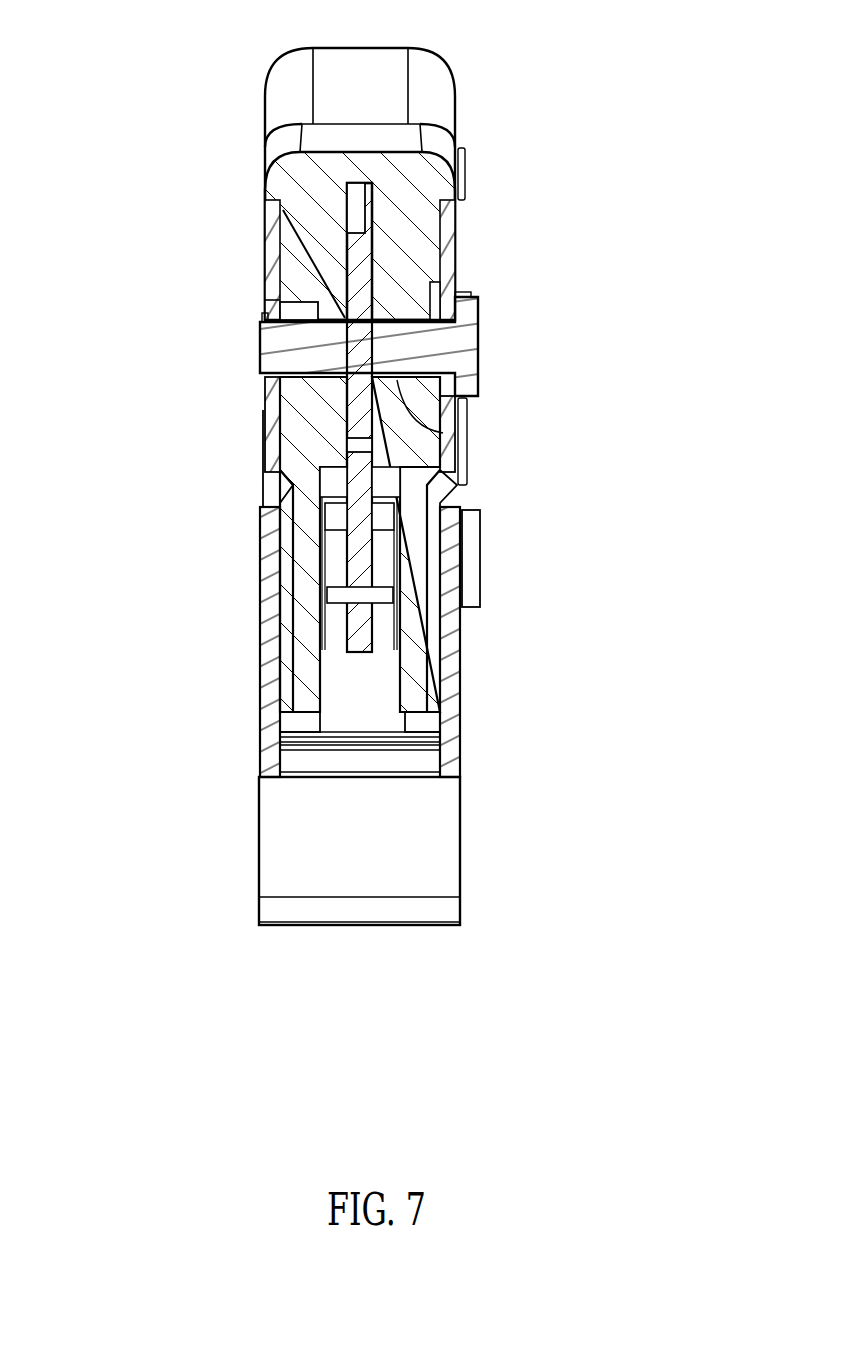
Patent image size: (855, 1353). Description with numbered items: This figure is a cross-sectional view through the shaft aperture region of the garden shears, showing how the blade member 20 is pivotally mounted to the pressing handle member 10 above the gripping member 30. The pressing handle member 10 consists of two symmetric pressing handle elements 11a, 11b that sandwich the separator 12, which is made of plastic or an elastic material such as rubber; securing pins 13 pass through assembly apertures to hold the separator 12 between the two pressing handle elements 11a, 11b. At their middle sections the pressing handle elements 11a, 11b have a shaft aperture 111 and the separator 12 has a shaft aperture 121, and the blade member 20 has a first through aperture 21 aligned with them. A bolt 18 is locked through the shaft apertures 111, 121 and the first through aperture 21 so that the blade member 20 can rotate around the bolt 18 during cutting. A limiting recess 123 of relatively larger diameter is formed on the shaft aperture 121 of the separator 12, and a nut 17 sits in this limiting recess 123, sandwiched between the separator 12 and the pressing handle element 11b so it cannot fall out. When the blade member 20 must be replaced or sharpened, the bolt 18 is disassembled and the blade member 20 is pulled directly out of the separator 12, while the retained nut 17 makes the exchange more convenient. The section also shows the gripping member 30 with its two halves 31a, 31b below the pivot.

The pressing handle member 10 is at (367, 358).
The separator 12 is at (432, 92).
The securing pin 13 is at (460, 172).
The blade member 20 is at (378, 273).
The first through aperture 21 is at (303, 213).
The bolt 18 is at (473, 343).
The nut 17 is at (266, 293).
The pressing handle element 11a is at (262, 422).
The pressing handle element 11b is at (450, 271).
The shaft aperture 111 is at (473, 296).
The shaft aperture 121 is at (472, 437).
The limiting recess 123 is at (287, 281).
The gripping member 30 is at (378, 716).
The first sleeve 31a is at (268, 635).
The second sleeve 31b is at (549, 642).